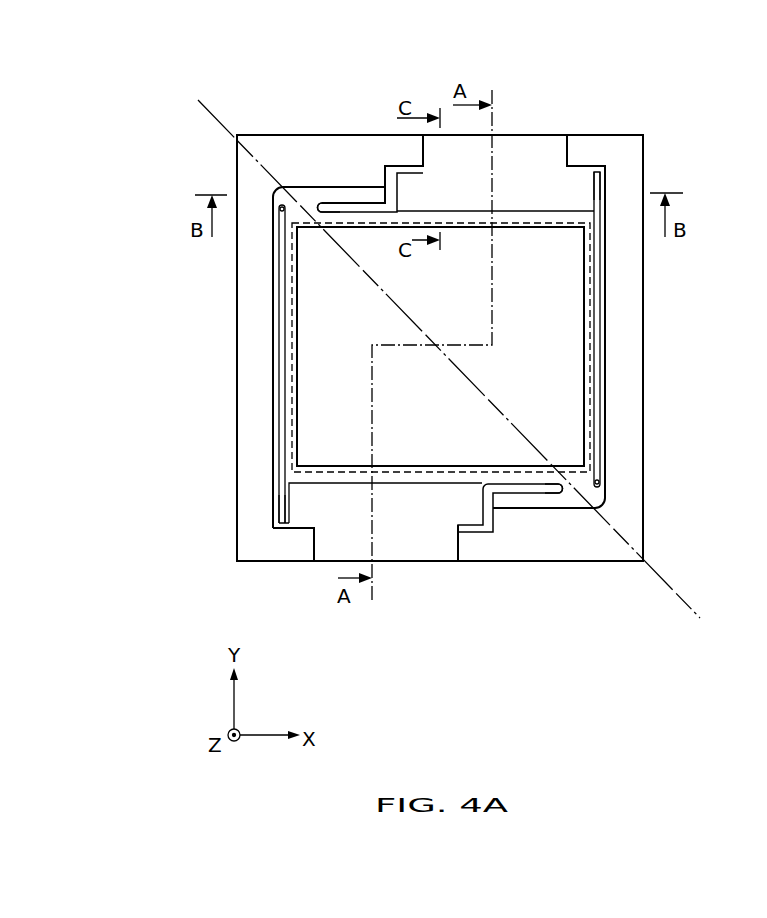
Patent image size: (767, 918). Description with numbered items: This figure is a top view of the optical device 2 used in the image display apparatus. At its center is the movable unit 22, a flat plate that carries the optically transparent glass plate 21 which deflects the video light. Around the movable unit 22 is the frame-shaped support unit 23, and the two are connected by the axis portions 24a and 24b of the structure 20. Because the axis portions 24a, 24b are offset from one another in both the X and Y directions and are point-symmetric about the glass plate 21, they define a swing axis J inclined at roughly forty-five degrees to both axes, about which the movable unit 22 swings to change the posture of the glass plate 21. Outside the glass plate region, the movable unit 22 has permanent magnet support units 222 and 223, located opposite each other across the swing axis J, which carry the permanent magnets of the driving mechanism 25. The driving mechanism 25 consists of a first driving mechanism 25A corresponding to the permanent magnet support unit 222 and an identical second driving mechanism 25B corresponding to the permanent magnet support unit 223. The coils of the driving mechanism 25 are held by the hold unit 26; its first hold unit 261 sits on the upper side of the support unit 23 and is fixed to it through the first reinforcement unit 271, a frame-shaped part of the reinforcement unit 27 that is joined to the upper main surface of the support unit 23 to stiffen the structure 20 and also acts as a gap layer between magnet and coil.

The optical device 2 is at (630, 111).
The structure 20 is at (237, 455).
The glass plate 21 is at (322, 290).
The movable unit 22 is at (275, 353).
The permanent magnet support unit 222 is at (605, 190).
The permanent magnet support unit 223 is at (282, 502).
The support unit 23 is at (523, 490).
The axis portion 24a is at (315, 200).
The axis portion 24b is at (567, 487).
The driving mechanism 25 is at (423, 350).
The first driving mechanism 25A is at (452, 126).
The second driving mechanism 25B is at (326, 570).
The hold unit 26 is at (451, 354).
The first hold unit 261 is at (528, 150).
The reinforcement unit 27 is at (689, 348).
The first reinforcement unit 271 is at (627, 366).